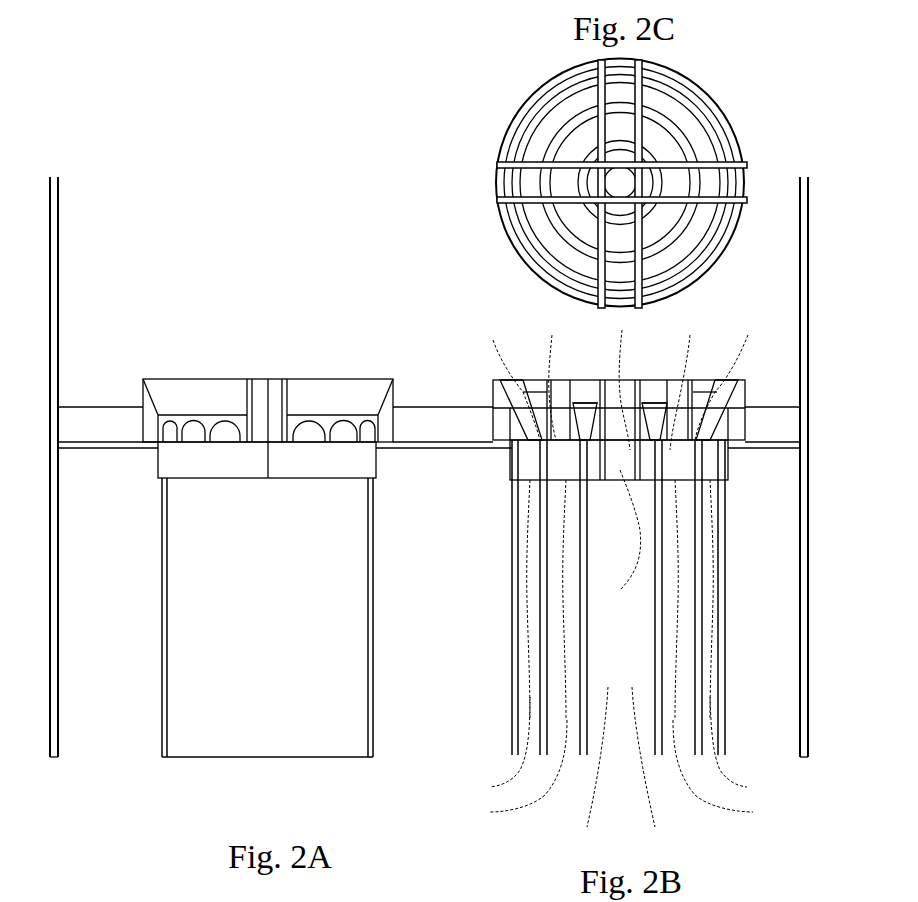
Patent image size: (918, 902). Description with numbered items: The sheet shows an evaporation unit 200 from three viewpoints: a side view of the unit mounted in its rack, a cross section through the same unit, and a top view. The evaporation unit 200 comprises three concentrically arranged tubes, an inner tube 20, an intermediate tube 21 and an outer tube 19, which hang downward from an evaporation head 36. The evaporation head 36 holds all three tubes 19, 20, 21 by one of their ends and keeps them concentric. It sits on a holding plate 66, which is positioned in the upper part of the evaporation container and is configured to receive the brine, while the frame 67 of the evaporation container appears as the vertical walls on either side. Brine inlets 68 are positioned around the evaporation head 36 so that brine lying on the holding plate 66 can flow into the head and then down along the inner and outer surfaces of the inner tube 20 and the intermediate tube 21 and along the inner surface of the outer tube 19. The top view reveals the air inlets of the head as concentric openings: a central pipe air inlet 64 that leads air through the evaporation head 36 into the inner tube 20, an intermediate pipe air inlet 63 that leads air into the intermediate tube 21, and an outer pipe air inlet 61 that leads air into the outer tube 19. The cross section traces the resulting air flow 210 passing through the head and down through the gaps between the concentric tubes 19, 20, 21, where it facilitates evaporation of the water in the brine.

In FIG. 2A, the outer tube 19 is at (162, 728).
In FIG. 2B, the outer tube 19 is at (513, 550).
In FIG. 2B, the inner tube 20 is at (582, 565).
In FIG. 2B, the intermediate tube 21 is at (543, 595).
In FIG. 2C, the evaporation head 36 is at (695, 103).
In FIG. 2A, the evaporation head 36 is at (307, 393).
In FIG. 2B, the evaporation head 36 is at (708, 380).
In FIG. 2C, the outer pipe air inlet 61 is at (553, 93).
In FIG. 2C, the intermediate pipe air inlet 63 is at (578, 135).
In FIG. 2C, the central pipe air inlet 64 is at (625, 185).
In FIG. 2A, the central pipe air inlet 64 is at (275, 412).
In FIG. 2A, the holding plate 66 is at (112, 445).
In FIG. 2A, the frame 67 is at (50, 325).
In FIG. 2A, the brine inlets 68 is at (195, 425).
In FIG. 2A, the evaporation unit 200 is at (152, 593).
In FIG. 2B, the air flow 210 is at (693, 797).